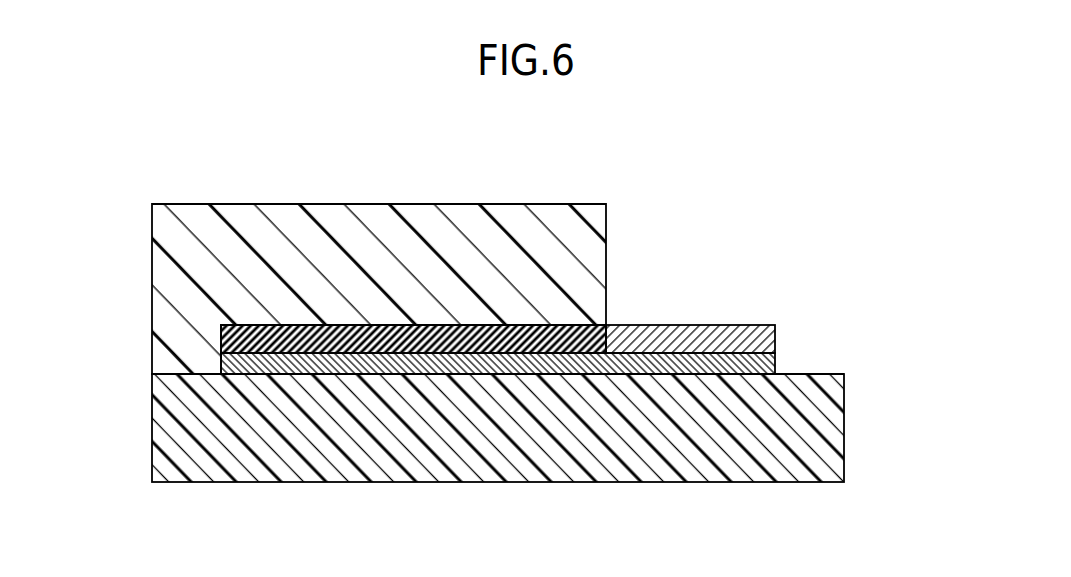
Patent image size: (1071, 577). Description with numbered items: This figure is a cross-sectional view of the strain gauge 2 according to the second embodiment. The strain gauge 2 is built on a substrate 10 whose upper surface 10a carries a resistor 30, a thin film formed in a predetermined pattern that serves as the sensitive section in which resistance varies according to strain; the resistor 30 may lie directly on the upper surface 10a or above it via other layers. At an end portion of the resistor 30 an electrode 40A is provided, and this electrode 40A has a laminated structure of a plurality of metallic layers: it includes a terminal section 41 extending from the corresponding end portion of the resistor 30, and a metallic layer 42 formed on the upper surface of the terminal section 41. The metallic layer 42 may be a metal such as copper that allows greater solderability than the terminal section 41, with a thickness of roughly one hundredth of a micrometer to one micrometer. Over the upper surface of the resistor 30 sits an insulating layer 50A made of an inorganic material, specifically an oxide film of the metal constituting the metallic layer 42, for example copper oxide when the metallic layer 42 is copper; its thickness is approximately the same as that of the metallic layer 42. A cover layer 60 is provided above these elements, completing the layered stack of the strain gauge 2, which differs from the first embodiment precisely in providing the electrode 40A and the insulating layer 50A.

The strain gauge 2 is at (91, 178).
The substrate 10 is at (175, 419).
The upper surface of substrate 10a is at (183, 375).
The resistor 30 is at (601, 377).
The electrode 40A is at (604, 375).
The terminal section 41 is at (610, 376).
The metallic layer 42 is at (772, 337).
The insulating layer 50A is at (235, 338).
The cover layer 60 is at (480, 204).